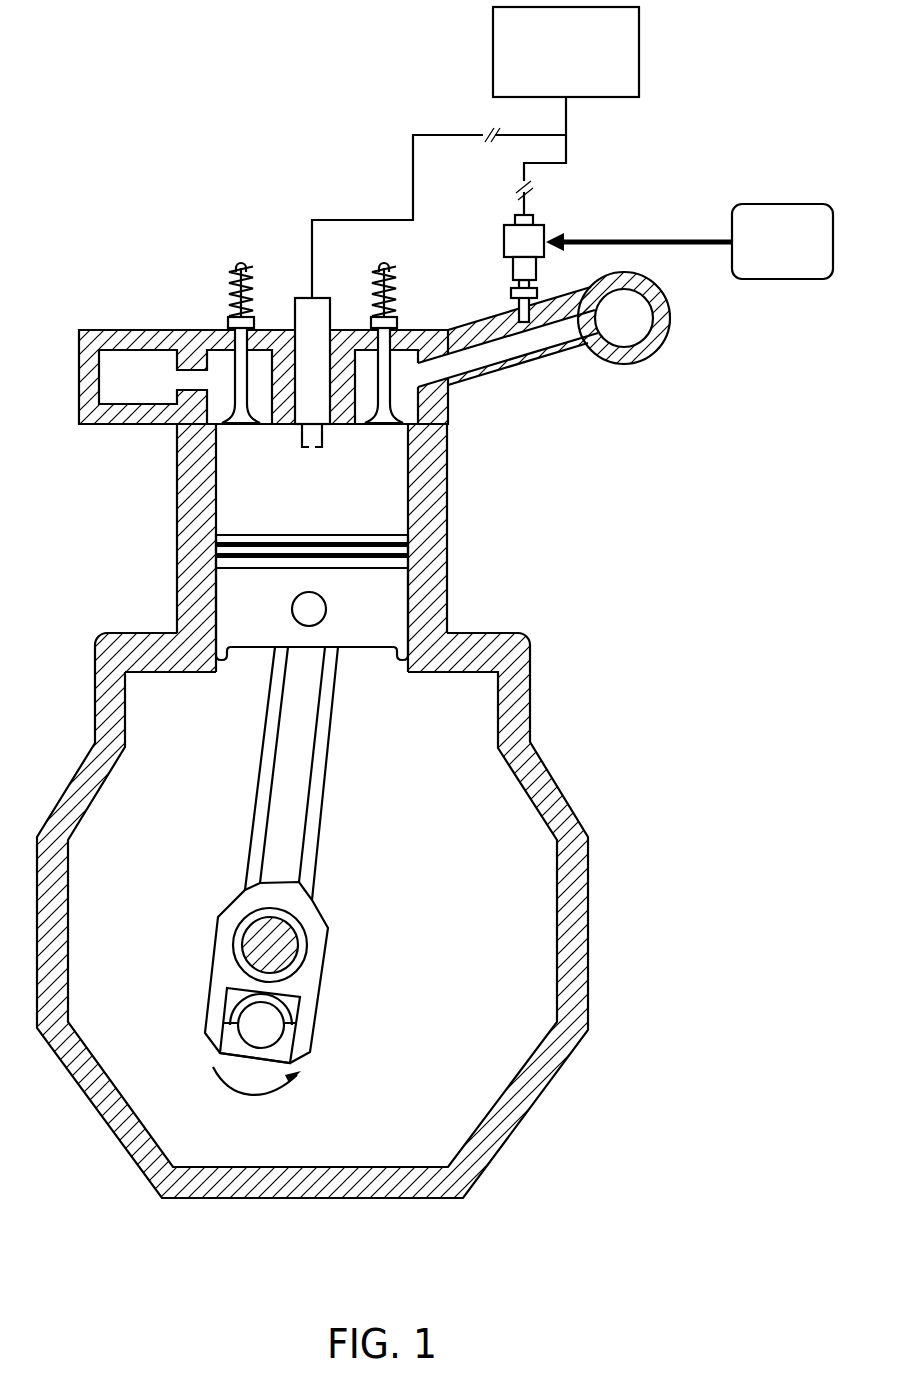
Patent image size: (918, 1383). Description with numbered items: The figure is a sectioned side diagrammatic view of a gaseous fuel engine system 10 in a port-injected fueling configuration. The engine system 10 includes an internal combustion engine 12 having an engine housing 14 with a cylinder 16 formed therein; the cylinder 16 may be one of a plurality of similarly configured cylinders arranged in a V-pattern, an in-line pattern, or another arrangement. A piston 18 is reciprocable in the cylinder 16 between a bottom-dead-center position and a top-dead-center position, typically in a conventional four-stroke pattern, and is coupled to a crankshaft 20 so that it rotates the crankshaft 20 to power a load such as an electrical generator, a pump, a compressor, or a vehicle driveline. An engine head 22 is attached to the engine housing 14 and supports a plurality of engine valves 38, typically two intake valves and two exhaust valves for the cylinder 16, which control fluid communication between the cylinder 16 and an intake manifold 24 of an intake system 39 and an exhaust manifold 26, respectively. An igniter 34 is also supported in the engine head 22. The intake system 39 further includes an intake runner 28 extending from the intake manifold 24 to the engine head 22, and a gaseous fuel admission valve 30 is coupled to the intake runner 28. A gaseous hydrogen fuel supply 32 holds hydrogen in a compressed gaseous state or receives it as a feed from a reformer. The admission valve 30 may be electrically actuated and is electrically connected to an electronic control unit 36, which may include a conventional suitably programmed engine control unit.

The gaseous fuel engine system 10 is at (46, 79).
The internal combustion engine 12 is at (541, 633).
The engine housing 14 is at (103, 639).
The cylinder 16 is at (214, 490).
The piston 18 is at (372, 637).
The crankshaft 20 is at (299, 945).
The engine head 22 is at (204, 327).
The intake manifold 24 is at (622, 365).
The exhaust manifold 26 is at (79, 404).
The intake runner 28 is at (533, 360).
The gaseous fuel admission valve 30 is at (503, 236).
The gaseous hydrogen fuel supply 32 is at (788, 281).
The igniter 34 is at (290, 312).
The electronic control unit 36 is at (640, 27).
The engine valves 38 is at (242, 427).
The intake system 39 is at (651, 194).